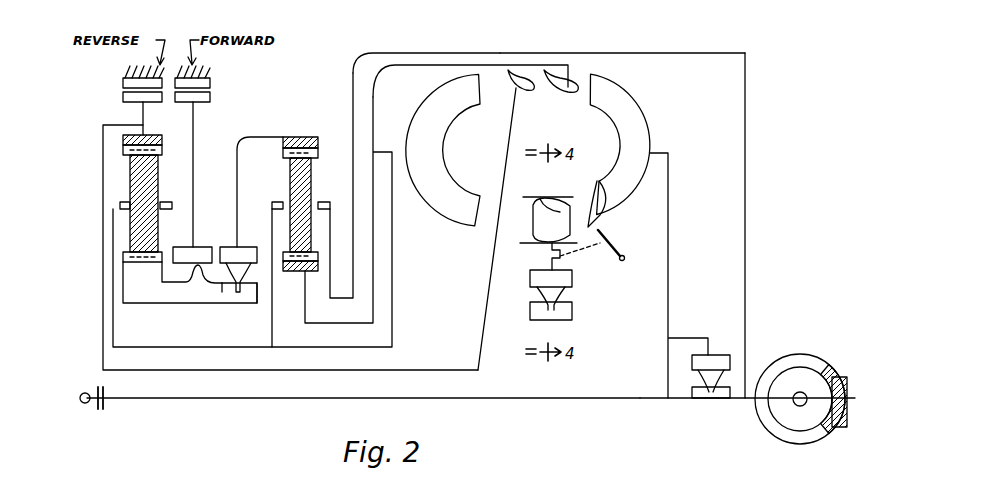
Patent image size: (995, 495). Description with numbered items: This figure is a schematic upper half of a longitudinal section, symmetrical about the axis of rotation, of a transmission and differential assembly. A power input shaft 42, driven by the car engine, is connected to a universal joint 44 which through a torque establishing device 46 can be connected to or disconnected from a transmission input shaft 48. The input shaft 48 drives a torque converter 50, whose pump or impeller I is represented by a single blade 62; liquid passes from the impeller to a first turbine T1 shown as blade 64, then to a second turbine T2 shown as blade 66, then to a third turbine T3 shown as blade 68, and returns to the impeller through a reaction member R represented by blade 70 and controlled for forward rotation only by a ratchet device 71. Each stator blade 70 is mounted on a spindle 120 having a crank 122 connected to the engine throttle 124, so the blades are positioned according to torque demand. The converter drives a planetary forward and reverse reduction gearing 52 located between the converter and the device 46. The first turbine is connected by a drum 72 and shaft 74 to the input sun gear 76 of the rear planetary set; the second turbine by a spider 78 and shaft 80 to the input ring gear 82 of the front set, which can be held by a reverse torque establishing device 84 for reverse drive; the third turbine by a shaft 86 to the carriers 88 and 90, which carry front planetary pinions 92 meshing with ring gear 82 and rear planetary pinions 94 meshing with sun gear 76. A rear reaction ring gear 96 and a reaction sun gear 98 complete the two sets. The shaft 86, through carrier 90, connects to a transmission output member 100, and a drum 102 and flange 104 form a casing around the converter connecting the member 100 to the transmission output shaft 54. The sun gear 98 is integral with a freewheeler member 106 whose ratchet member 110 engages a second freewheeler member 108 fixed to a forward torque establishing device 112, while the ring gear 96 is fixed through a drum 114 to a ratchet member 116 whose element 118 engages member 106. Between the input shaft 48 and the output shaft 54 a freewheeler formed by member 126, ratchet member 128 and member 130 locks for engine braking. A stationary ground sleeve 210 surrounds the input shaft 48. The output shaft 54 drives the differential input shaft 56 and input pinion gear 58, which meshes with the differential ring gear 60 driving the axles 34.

The axles 34 is at (803, 393).
The power input shaft 42 is at (81, 391).
The universal joint 44 is at (106, 409).
The torque establishing device 46 is at (105, 394).
The transmission input shaft 48 is at (250, 398).
The torque converter 50 is at (616, 52).
The planetary forward and reverse reduction gearing 52 is at (223, 94).
The transmission output shaft 54 is at (738, 400).
The differential input shaft 56 is at (782, 412).
The input pinion gear 58 is at (838, 427).
The differential ring gear 60 is at (792, 356).
The blade 62 is at (632, 115).
The blade 64 is at (552, 70).
The blade 66 is at (512, 90).
The blade 68 is at (430, 150).
The blade 70 is at (540, 202).
The ratchet device 71 is at (572, 292).
The drum 72 is at (385, 72).
The shaft 74 is at (330, 325).
The input sun gear 76 is at (294, 272).
The spider 78 is at (490, 270).
The shaft 80 is at (437, 370).
The input ring gear 82 is at (145, 137).
The reverse torque establishing device 84 is at (125, 97).
The shaft 86 is at (185, 348).
The carrier 88 is at (162, 208).
The carrier 90 is at (282, 204).
The front planetary pinions 92 is at (150, 175).
The rear planetary pinions 94 is at (305, 185).
The rear reaction ring gear 96 is at (298, 136).
The reaction sun gear 98 is at (145, 296).
The transmission output member 100 is at (326, 300).
The drum 102 is at (356, 70).
The flange 104 is at (746, 118).
The freewheeler member 106 is at (248, 300).
The freewheeler member 108 is at (195, 246).
The ratchet member 110 is at (192, 268).
The forward torque establishing device 112 is at (196, 98).
The drum 114 is at (240, 137).
The ratchet member 116 is at (238, 246).
The ratchet element 118 is at (236, 288).
The spindle 120 is at (545, 245).
The crank 122 is at (565, 258).
The throttle 124 is at (610, 250).
The member 126 is at (713, 355).
The ratchet member 128 is at (710, 400).
The member 130 is at (692, 396).
The ground sleeve 210 is at (572, 316).
The first turbine T1 is at (571, 105).
The second turbine T2 is at (525, 107).
The third turbine T3 is at (438, 169).
The reaction member R is at (582, 218).
The impeller I is at (657, 144).